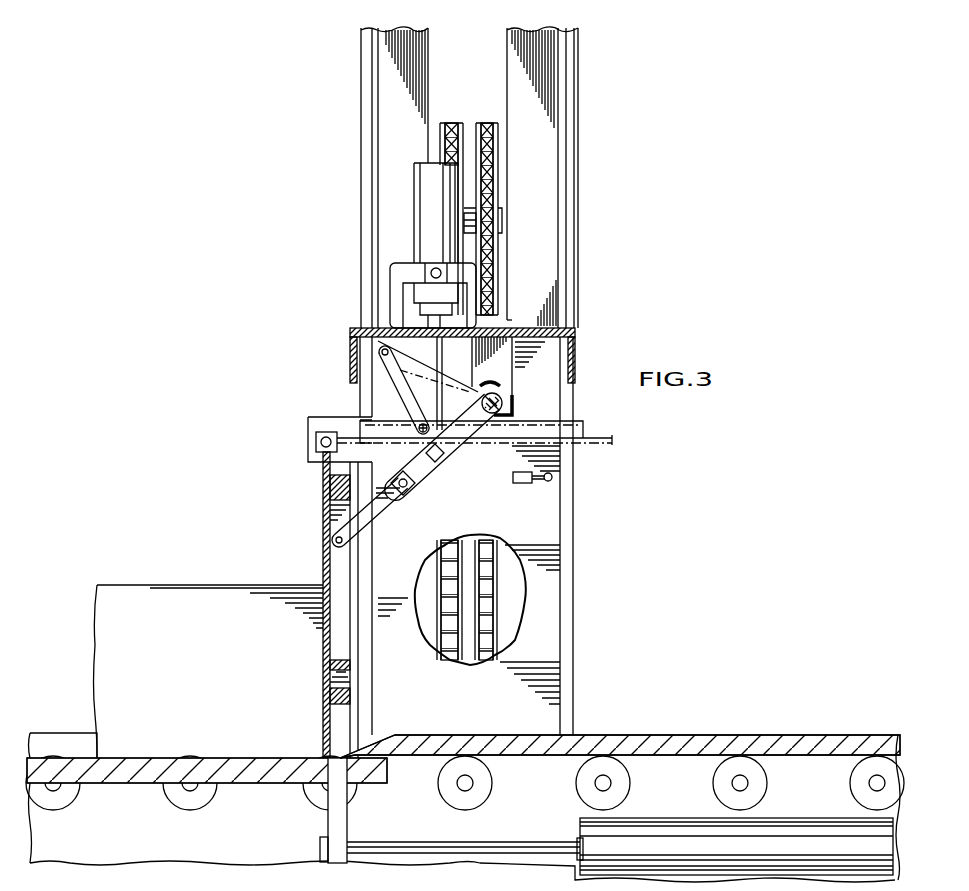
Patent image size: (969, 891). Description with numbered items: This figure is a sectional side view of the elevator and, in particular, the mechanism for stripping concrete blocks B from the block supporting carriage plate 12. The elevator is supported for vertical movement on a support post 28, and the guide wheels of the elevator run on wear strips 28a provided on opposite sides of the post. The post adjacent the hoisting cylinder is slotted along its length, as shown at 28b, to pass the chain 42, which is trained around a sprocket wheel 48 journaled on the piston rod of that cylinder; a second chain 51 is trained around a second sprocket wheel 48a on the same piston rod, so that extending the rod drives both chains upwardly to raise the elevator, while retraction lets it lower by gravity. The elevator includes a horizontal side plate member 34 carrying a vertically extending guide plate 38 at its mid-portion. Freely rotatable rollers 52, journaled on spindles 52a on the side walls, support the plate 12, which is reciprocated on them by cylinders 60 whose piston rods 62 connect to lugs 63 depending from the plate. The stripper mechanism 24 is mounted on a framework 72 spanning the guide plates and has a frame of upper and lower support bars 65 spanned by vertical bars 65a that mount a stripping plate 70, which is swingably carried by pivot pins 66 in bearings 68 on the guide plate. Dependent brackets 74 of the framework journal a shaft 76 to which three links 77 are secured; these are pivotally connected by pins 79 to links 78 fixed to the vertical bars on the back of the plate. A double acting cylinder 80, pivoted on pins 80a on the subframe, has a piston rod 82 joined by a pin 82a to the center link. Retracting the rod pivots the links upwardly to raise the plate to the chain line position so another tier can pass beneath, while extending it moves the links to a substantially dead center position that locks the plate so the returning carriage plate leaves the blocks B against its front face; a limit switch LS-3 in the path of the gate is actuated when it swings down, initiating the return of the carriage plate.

The transfer plate 12 is at (653, 747).
The stripper mechanism 24 is at (290, 513).
The support post 28 is at (550, 249).
The wear strips 28a is at (361, 90).
The slot 28b is at (508, 46).
The side plate member 34 is at (245, 839).
The guide plate 38 is at (492, 527).
The chain 42 is at (497, 612).
The sprocket wheel 48 is at (488, 123).
The second sprocket wheel 48a is at (449, 122).
The chain 51 is at (436, 580).
The rollers 52 is at (623, 783).
The spindles 52a is at (593, 783).
The cylinders 60 is at (794, 826).
The piston rods 62 is at (393, 850).
The lugs 63 is at (341, 827).
The support bars 65 is at (324, 486).
The vertical bars 65a is at (342, 670).
The pivot pins 66 is at (311, 446).
The bearings 68 is at (326, 432).
The stripping plate 70 is at (322, 551).
The framework 72 is at (517, 330).
The brackets 74 is at (488, 360).
The shaft 76 is at (503, 401).
The links 77 is at (453, 448).
The links 78 is at (374, 512).
The pins 79 is at (399, 493).
The hydraulically operated cylinder 80 is at (430, 217).
The pins 80a is at (431, 273).
The piston rod 82 is at (490, 388).
The pin 82a is at (438, 461).
The concrete blocks B is at (210, 696).
The limit switch LS-3 is at (518, 484).